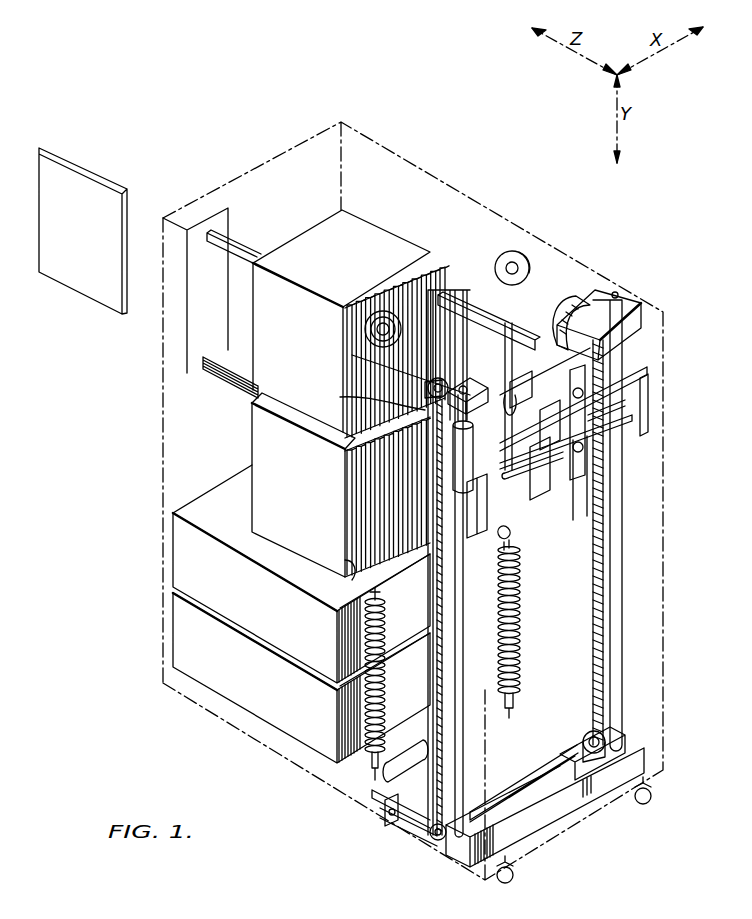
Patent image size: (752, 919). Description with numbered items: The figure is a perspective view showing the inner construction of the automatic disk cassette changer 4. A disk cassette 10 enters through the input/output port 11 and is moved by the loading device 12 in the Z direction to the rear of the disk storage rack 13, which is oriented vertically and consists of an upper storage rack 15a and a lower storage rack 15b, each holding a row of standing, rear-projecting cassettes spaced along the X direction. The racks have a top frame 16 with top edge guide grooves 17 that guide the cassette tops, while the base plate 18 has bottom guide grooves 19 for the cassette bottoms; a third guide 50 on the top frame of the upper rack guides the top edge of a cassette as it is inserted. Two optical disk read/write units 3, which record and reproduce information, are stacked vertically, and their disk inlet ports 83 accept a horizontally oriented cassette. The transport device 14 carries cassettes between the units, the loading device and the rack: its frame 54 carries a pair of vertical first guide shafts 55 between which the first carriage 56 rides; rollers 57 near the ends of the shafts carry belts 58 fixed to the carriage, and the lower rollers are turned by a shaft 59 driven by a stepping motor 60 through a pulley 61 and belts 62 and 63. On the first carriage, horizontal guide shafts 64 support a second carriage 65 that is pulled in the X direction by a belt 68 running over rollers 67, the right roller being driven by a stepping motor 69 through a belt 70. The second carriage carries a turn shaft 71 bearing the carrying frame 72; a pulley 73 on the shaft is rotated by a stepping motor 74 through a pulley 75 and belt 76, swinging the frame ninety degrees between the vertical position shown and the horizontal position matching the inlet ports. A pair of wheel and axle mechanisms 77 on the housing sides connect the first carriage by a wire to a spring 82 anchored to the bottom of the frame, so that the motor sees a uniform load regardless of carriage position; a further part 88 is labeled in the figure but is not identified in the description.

The optical disk read/write unit 3 is at (168, 600).
The changer 4 is at (384, 142).
The disk cassette 10 is at (72, 185).
The input/output port 11 is at (187, 340).
The loading device 12 is at (228, 378).
The disk storage rack 13 is at (341, 305).
The transport device 14 is at (655, 398).
The upper storage rack 15a is at (318, 245).
The lower storage rack 15b is at (290, 548).
The top frame 16 is at (360, 414).
The top edge guide grooves 17 is at (360, 414).
The base plate 18 is at (415, 250).
The bottom guide grooves 19 is at (350, 562).
The third guide 50 is at (243, 247).
The frame 54 is at (630, 302).
The first guide shafts 55 is at (624, 655).
The first carriage 56 is at (648, 425).
The rollers 57 is at (440, 368).
The belts 58 is at (597, 635).
The shaft 59 is at (540, 790).
The stepping motor 60 is at (400, 762).
The pulley 61 is at (372, 794).
The belt 62 is at (385, 814).
The belt 63 is at (420, 832).
The horizontal guide shafts 64 is at (640, 350).
The second carriage 65 is at (545, 495).
The rollers 67 is at (600, 375).
The belt 68 is at (600, 395).
The stepping motor 69 is at (492, 522).
The belt 70 is at (490, 500).
The turn shaft 71 is at (579, 495).
The carrying frame 72 is at (468, 310).
The pulley 73 is at (600, 450).
The stepping motor 74 is at (556, 380).
The pulley 75 is at (580, 345).
The belt 76 is at (560, 462).
The wheel and axle mechanism 77 is at (362, 338).
The spring 82 is at (364, 716).
The disk inlet ports 83 is at (440, 598).
The cable 88 is at (372, 394).